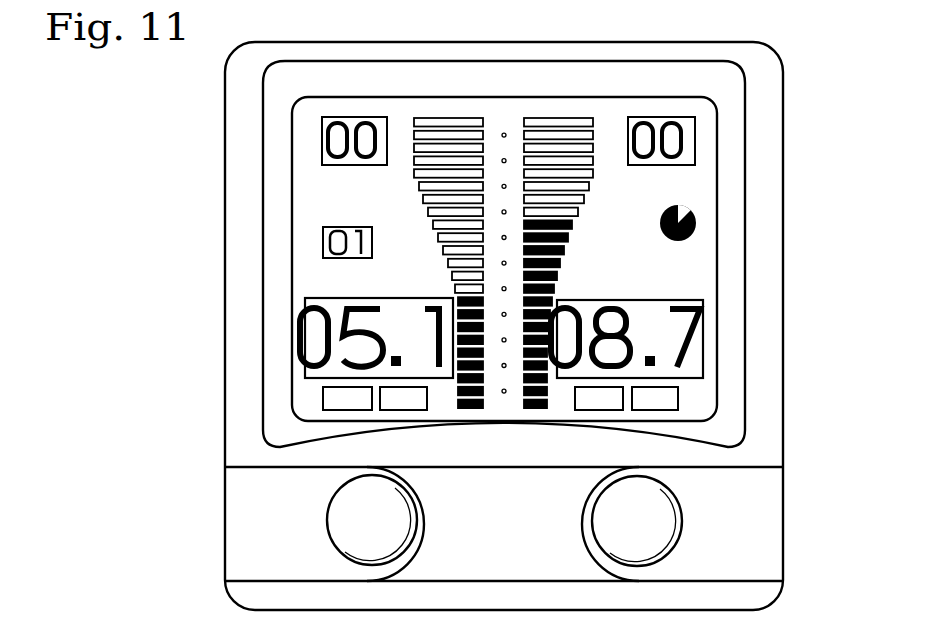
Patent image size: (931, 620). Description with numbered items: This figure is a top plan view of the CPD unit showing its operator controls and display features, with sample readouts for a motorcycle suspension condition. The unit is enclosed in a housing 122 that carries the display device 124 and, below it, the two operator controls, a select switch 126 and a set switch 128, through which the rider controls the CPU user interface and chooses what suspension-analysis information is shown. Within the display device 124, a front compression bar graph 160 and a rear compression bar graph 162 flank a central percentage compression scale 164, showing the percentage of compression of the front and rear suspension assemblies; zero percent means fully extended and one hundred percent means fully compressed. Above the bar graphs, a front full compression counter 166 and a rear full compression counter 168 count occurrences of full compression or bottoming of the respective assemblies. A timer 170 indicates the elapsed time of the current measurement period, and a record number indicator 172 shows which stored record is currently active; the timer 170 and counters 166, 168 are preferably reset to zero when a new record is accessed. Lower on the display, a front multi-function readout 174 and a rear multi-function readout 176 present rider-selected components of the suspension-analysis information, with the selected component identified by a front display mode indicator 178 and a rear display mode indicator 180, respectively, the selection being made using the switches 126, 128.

The housing 122 is at (247, 62).
The display device 124 is at (699, 205).
The select switch 126 is at (361, 530).
The set switch 128 is at (650, 529).
The front compression bar graph 160 is at (452, 133).
The rear compression bar graph 162 is at (568, 147).
The percentage compression scale 164 is at (505, 116).
The front full compression counter 166 is at (322, 138).
The rear full compression counter 168 is at (695, 145).
The timer 170 is at (705, 262).
The record number indicator 172 is at (322, 240).
The front multi-function readout 174 is at (305, 310).
The rear multi-function readout 176 is at (703, 308).
The front display mode indicator 178 is at (393, 412).
The rear display mode indicator 180 is at (590, 411).